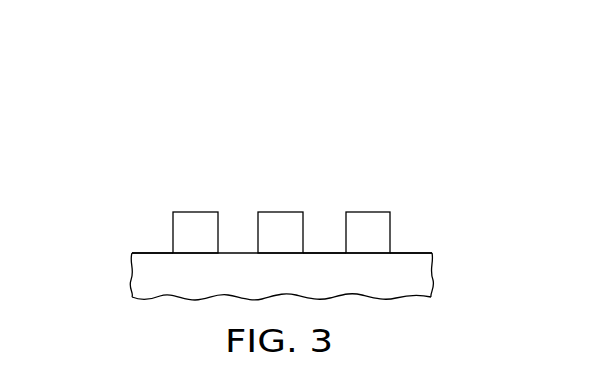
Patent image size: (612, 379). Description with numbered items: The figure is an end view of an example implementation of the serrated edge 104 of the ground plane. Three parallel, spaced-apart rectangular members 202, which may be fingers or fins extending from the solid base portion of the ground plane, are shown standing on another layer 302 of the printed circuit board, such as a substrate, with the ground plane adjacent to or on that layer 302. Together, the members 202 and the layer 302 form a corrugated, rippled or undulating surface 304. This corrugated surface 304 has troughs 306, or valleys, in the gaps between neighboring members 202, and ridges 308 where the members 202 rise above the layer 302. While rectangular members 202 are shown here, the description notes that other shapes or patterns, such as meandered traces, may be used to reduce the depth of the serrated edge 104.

The serrated edge 104 is at (215, 136).
The rectangular members 202 is at (194, 220).
The layer 302 is at (163, 290).
The corrugated surface 304 is at (393, 230).
The troughs 306 is at (324, 209).
The ridges 308 is at (141, 213).